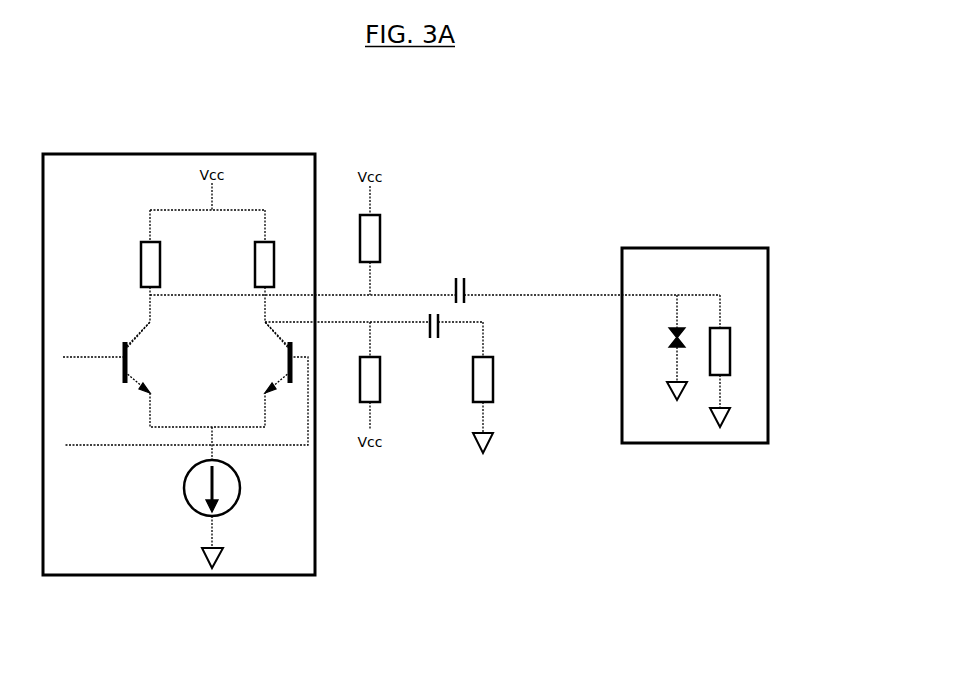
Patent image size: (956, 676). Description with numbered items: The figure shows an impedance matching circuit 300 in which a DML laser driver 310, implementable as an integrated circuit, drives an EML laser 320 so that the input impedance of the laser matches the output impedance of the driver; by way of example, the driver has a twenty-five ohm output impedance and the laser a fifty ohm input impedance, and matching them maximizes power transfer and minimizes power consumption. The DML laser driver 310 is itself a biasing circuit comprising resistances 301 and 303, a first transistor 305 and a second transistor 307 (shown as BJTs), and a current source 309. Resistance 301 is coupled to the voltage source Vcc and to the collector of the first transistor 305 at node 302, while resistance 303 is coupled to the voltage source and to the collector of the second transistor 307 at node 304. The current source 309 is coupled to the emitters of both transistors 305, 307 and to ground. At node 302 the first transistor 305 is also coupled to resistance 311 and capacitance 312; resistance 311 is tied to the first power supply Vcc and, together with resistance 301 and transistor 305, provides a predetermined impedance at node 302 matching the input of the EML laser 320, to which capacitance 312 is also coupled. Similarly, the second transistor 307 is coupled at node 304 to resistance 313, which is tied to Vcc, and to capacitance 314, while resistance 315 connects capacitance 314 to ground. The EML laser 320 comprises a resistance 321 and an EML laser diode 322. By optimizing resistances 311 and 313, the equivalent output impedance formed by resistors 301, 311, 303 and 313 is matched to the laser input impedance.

The impedance matching circuit 300 is at (724, 117).
The resistance 301 is at (163, 247).
The node 302 is at (148, 297).
The resistance 303 is at (253, 273).
The node 304 is at (262, 302).
The first transistor 305 is at (130, 359).
The second transistor 307 is at (285, 350).
The current source 309 is at (228, 463).
The DML laser driver 310 is at (316, 524).
The resistance 311 is at (383, 226).
The capacitance 312 is at (470, 282).
The resistance 313 is at (383, 366).
The capacitance 314 is at (426, 326).
The resistance 315 is at (497, 375).
The EML laser 320 is at (690, 445).
The resistance 321 is at (733, 345).
The EML laser diode 322 is at (668, 343).